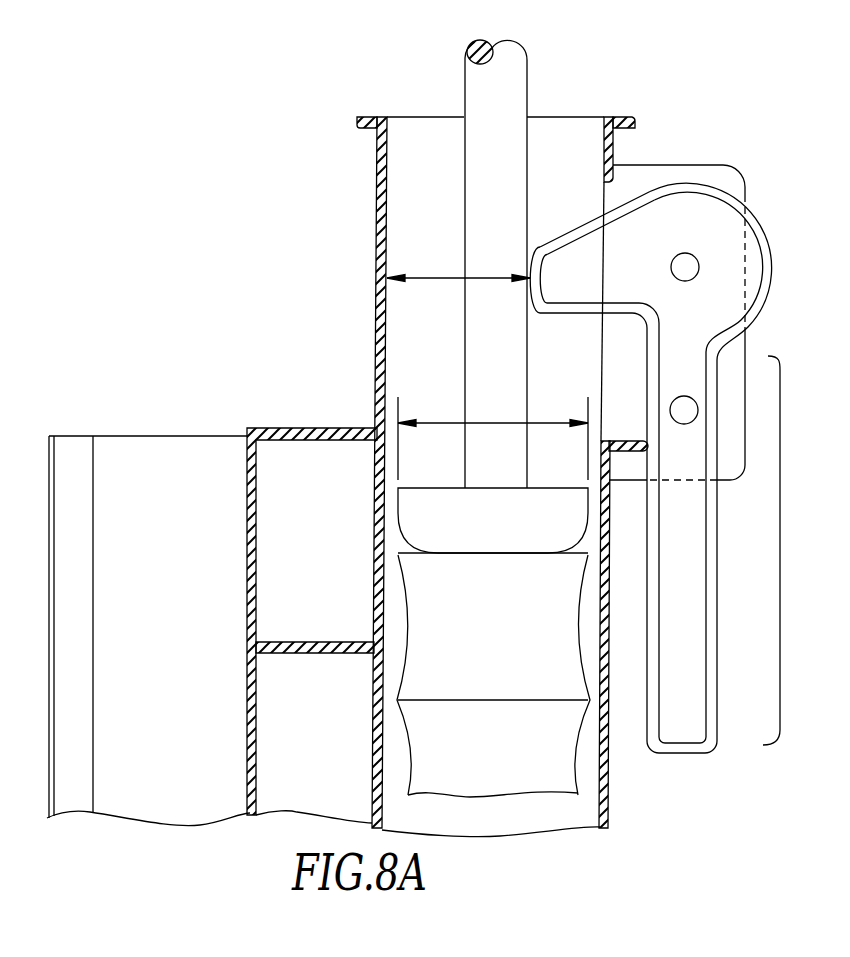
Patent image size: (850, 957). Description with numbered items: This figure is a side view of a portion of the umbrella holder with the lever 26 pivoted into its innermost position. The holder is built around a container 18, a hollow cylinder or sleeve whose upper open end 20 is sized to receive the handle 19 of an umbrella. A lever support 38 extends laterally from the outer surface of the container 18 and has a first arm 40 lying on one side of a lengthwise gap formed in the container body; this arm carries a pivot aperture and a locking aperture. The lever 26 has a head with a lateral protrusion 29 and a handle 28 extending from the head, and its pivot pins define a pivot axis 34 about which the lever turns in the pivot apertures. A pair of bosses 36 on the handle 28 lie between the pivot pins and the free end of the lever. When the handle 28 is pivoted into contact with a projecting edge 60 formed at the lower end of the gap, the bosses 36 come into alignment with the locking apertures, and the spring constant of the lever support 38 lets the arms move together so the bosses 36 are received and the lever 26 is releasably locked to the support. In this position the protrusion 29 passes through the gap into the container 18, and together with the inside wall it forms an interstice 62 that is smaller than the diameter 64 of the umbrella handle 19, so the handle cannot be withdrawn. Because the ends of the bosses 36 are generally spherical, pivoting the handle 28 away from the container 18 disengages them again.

The container 18 is at (377, 212).
The handle 19 is at (573, 757).
The upper open end 20 is at (560, 103).
The lever 26 is at (727, 730).
The handle 28 is at (783, 547).
The protrusion 29 is at (582, 250).
The pivot axis 34 is at (671, 263).
The bosses 36 is at (682, 396).
The lever support 38 is at (672, 157).
The first arm 40 is at (735, 176).
The projecting edge 60 is at (622, 441).
The interstice 62 is at (447, 278).
The diameter 64 is at (488, 423).